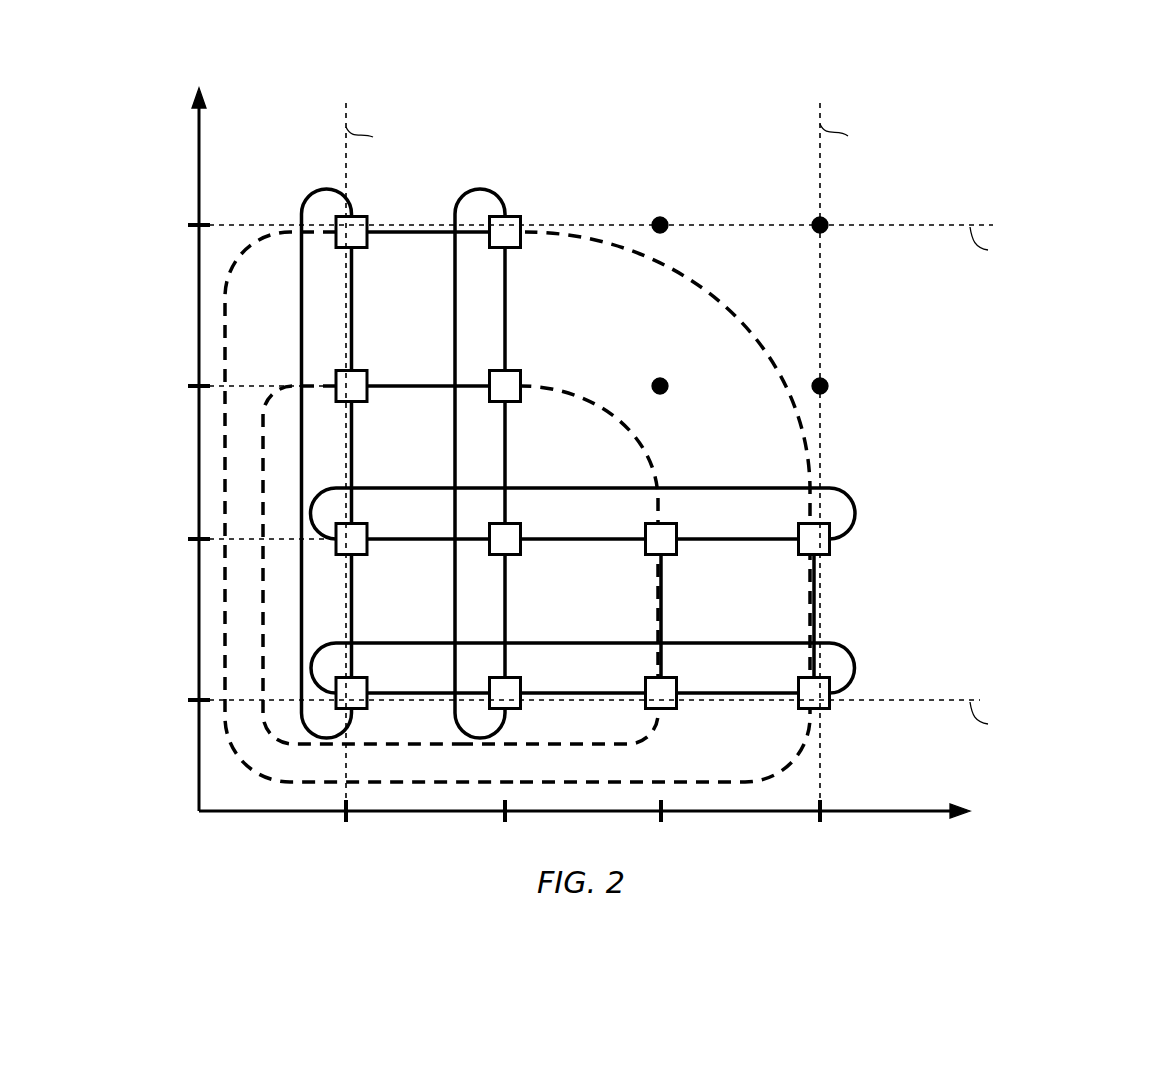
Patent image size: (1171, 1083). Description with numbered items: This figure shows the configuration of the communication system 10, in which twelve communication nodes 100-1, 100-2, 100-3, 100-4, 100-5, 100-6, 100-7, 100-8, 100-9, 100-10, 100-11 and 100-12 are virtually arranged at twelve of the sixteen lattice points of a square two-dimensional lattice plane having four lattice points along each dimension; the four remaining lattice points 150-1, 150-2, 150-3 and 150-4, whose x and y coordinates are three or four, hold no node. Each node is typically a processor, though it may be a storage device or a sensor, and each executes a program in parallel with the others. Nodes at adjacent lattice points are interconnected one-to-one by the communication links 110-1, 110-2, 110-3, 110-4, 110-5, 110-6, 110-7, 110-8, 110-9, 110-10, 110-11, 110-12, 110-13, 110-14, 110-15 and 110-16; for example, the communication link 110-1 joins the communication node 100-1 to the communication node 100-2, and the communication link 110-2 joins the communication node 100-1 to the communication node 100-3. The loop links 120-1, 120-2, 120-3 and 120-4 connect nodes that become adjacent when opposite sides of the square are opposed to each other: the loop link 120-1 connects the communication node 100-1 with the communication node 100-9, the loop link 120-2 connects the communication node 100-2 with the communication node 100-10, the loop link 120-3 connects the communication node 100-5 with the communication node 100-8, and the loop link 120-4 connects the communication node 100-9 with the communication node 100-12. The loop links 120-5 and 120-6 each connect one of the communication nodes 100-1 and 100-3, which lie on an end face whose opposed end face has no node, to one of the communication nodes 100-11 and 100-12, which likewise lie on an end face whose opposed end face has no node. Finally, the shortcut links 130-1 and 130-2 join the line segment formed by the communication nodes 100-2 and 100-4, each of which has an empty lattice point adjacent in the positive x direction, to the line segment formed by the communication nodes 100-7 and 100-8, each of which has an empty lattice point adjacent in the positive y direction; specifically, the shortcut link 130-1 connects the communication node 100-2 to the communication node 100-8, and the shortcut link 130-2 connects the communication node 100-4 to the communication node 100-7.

The communication system 10 is at (1131, 87).
The communication node 100-1 is at (366, 220).
The communication node 100-2 is at (521, 220).
The communication node 100-3 is at (367, 373).
The communication node 100-4 is at (522, 373).
The communication node 100-5 is at (367, 527).
The communication node 100-6 is at (522, 527).
The communication node 100-7 is at (678, 527).
The communication node 100-8 is at (830, 543).
The communication node 100-9 is at (367, 681).
The communication node 100-10 is at (522, 681).
The communication node 100-11 is at (678, 681).
The communication node 100-12 is at (830, 712).
The communication link 110-1 is at (398, 236).
The communication link 110-2 is at (353, 297).
The communication link 110-3 is at (507, 297).
The communication link 110-4 is at (398, 390).
The communication link 110-5 is at (353, 452).
The communication link 110-6 is at (507, 440).
The communication link 110-7 is at (398, 543).
The communication link 110-8 is at (580, 543).
The communication link 110-9 is at (732, 543).
The communication link 110-10 is at (353, 605).
The communication link 110-11 is at (507, 605).
The communication link 110-12 is at (663, 605).
The communication link 110-13 is at (816, 605).
The communication link 110-14 is at (398, 697).
The communication link 110-15 is at (560, 697).
The communication link 110-16 is at (728, 697).
The loop link 120-1 is at (330, 192).
The loop link 120-2 is at (481, 192).
The loop link 120-3 is at (730, 488).
The loop link 120-4 is at (857, 668).
The loop link 120-5 is at (258, 238).
The loop link 120-6 is at (282, 387).
The shortcut link 130-1 is at (710, 302).
The shortcut link 130-2 is at (630, 442).
The lattice point 150-1 is at (661, 220).
The lattice point 150-2 is at (823, 220).
The lattice point 150-3 is at (662, 380).
The lattice point 150-4 is at (823, 388).